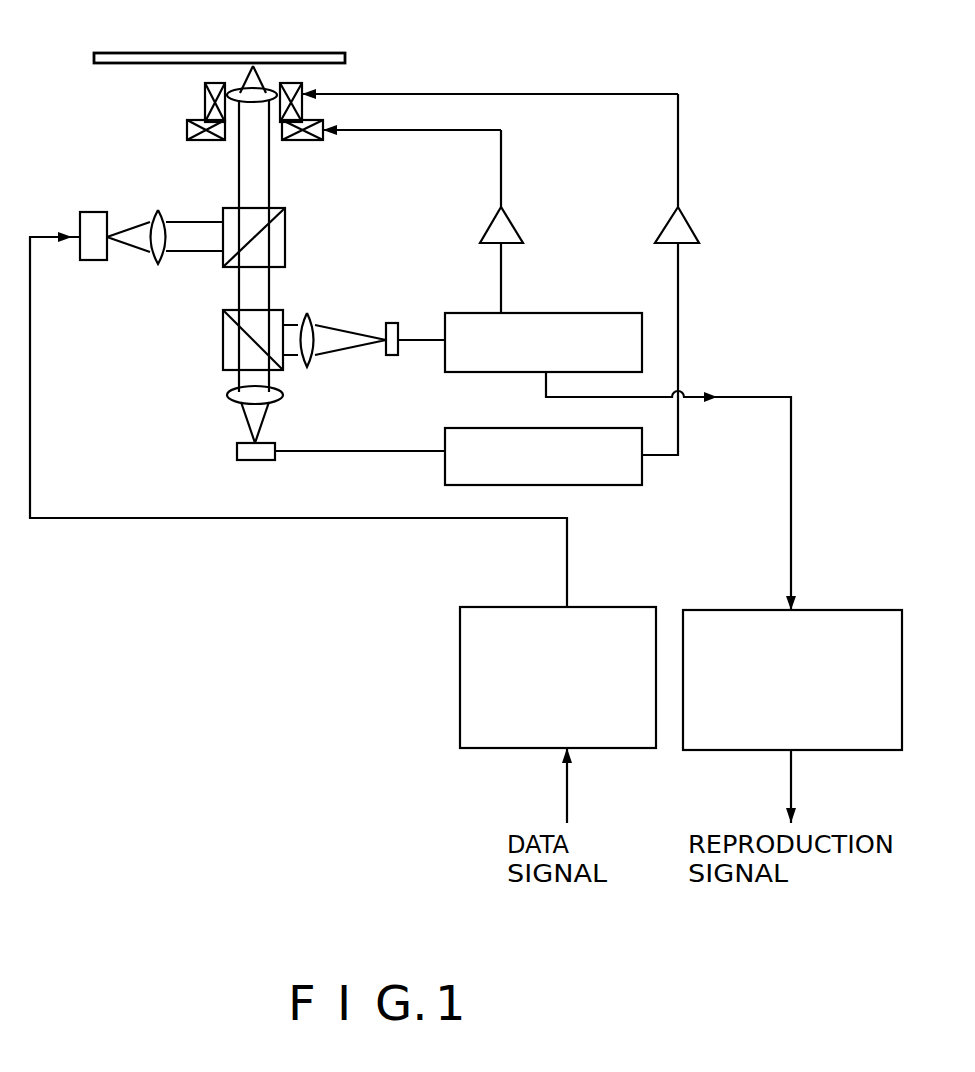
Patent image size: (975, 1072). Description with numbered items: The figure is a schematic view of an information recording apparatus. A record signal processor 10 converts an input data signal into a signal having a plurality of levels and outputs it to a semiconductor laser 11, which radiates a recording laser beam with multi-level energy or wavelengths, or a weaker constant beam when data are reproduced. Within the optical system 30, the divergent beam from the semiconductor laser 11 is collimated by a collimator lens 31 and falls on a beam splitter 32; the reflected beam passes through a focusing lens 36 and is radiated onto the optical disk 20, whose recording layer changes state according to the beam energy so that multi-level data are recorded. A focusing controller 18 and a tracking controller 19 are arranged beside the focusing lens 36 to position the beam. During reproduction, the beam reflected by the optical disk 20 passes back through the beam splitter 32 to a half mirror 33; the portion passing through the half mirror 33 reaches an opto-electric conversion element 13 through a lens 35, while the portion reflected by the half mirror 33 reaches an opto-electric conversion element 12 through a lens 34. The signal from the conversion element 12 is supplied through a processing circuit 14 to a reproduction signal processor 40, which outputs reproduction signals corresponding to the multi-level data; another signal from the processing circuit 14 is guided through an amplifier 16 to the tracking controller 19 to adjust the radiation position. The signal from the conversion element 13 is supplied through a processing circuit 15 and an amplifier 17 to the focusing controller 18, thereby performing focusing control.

The record signal processor 10 is at (620, 607).
The semiconductor laser 11 is at (86, 212).
The opto-electric conversion element 12 is at (392, 323).
The opto-electric conversion element 13 is at (237, 452).
The processing circuit 14 is at (583, 313).
The processing circuit 15 is at (445, 440).
The amplifier 16 is at (514, 222).
The amplifier 17 is at (690, 222).
The focusing controller 18 is at (205, 96).
The tracking controller 19 is at (187, 131).
The optical disk 20 is at (318, 53).
The optical system 30 is at (360, 251).
The collimator lens 31 is at (157, 264).
The beam splitter 32 is at (286, 212).
The half mirror 33 is at (223, 348).
The lens 34 is at (305, 314).
The lens 35 is at (227, 395).
The focusing lens 36 is at (277, 90).
The reproduction signal processor 40 is at (855, 610).